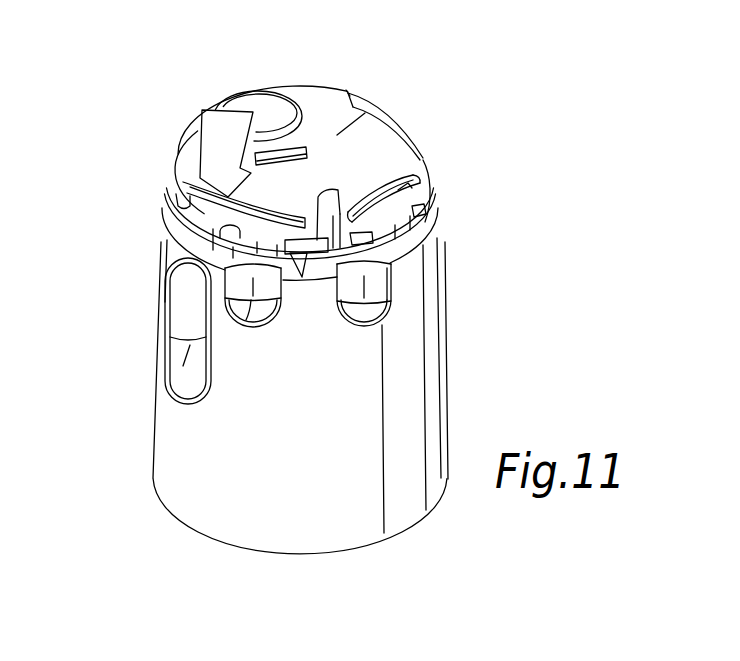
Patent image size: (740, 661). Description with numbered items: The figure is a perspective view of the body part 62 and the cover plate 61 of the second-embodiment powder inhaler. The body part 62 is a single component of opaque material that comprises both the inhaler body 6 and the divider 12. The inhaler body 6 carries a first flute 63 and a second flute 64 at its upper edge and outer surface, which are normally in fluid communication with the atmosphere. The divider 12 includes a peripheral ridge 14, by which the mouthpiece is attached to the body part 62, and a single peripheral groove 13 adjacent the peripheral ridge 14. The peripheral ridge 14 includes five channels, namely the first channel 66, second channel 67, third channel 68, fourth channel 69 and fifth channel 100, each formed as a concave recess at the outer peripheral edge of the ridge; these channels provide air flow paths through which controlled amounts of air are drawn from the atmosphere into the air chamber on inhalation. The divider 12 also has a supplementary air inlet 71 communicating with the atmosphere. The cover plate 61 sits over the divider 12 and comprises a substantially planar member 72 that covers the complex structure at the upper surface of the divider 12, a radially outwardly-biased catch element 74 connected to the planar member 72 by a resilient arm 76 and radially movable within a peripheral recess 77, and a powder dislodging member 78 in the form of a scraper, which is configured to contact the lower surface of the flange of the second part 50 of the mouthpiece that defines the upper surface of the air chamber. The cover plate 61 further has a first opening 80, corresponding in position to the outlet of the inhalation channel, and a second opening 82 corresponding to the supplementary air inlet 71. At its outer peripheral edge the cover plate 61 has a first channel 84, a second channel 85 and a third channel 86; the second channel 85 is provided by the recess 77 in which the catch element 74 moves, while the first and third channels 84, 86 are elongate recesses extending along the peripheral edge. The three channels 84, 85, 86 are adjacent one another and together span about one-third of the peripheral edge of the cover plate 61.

The inhaler body 6 is at (432, 423).
The divider 12 is at (390, 124).
The peripheral groove 13 is at (178, 247).
The peripheral ridge 14 is at (178, 187).
The second part 50 is at (386, 314).
The cover plate 61 is at (349, 93).
The body part 62 is at (150, 390).
The first flute 63 is at (258, 318).
The second flute 64 is at (357, 320).
The first channel 66 is at (170, 218).
The second channel 67 is at (200, 262).
The third channel 68 is at (303, 283).
The fourth channel 69 is at (345, 243).
The supplementary air inlet 71 is at (408, 138).
The planar member 72 is at (372, 113).
The catch element 74 is at (315, 225).
The resilient arm 76 is at (285, 233).
The peripheral recess 77 is at (337, 205).
The powder dislodging member 78 is at (212, 130).
The first opening 80 is at (275, 120).
The second opening 82 is at (355, 93).
The first channel 84 is at (183, 197).
The second channel 85 is at (313, 228).
The third channel 86 is at (406, 185).
The fifth channel 100 is at (415, 212).